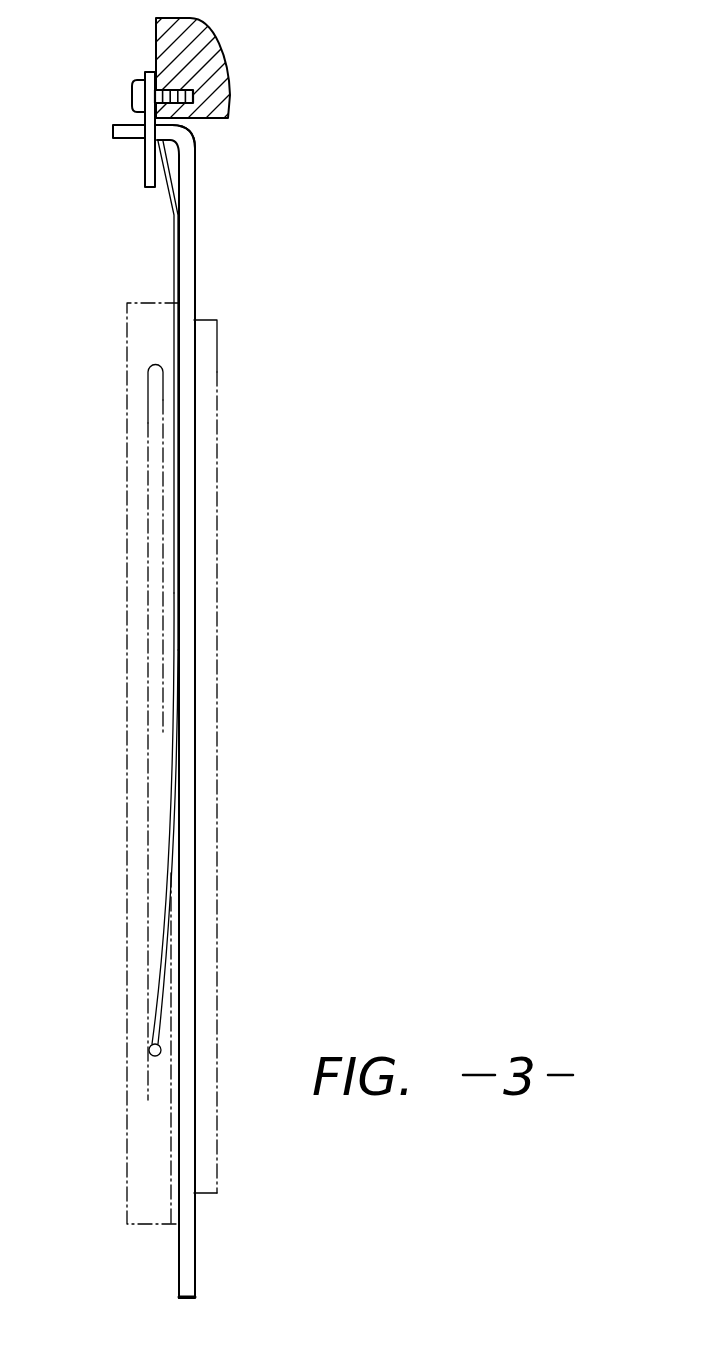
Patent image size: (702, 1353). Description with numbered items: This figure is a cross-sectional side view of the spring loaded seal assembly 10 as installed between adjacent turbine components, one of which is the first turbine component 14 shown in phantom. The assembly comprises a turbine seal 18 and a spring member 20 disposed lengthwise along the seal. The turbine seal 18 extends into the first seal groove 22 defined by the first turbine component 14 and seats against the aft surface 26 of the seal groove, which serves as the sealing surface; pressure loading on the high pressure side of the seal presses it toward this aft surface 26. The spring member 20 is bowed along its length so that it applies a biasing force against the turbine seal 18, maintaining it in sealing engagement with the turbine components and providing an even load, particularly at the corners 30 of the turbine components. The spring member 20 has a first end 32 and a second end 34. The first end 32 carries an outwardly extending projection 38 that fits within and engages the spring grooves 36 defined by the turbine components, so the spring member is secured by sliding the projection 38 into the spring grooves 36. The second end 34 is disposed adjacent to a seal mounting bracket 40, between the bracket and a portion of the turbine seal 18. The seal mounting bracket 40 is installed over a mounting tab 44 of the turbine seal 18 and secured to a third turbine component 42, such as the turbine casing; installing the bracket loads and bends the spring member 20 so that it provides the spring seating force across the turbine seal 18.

The spring loaded seal assembly 10 is at (234, 243).
The first turbine component 14 is at (125, 348).
The turbine seal 18 is at (198, 1226).
The spring member 20 is at (171, 263).
The first seal groove 22 is at (178, 1153).
The aft surface 26 is at (194, 814).
The corners 30 is at (195, 313).
The first end 32 is at (157, 973).
The second end 34 is at (177, 200).
The spring grooves 36 is at (155, 462).
The projection 38 is at (150, 1047).
The seal mounting bracket 40 is at (145, 175).
The third turbine component 42 is at (232, 80).
The mounting tab 44 is at (181, 134).